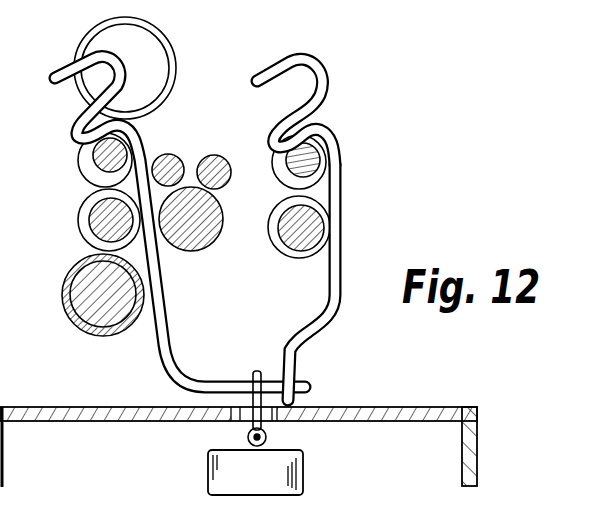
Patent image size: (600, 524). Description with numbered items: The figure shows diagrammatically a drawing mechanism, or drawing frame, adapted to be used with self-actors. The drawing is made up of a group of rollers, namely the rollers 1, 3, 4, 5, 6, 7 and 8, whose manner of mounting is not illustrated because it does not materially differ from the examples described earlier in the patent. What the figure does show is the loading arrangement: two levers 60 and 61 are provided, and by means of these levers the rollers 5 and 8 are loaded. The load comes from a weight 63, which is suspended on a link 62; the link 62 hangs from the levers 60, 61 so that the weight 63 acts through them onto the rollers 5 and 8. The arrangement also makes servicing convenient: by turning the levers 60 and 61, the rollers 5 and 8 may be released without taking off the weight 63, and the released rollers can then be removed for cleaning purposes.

The roller 1 is at (289, 243).
The roller 3 is at (199, 241).
The roller 4 is at (90, 222).
The roller 5 is at (310, 112).
The roller 6 is at (218, 164).
The roller 7 is at (169, 166).
The roller 8 is at (86, 164).
The lever 60 is at (343, 268).
The lever 61 is at (166, 320).
The link 62 is at (246, 421).
The weight 63 is at (255, 472).